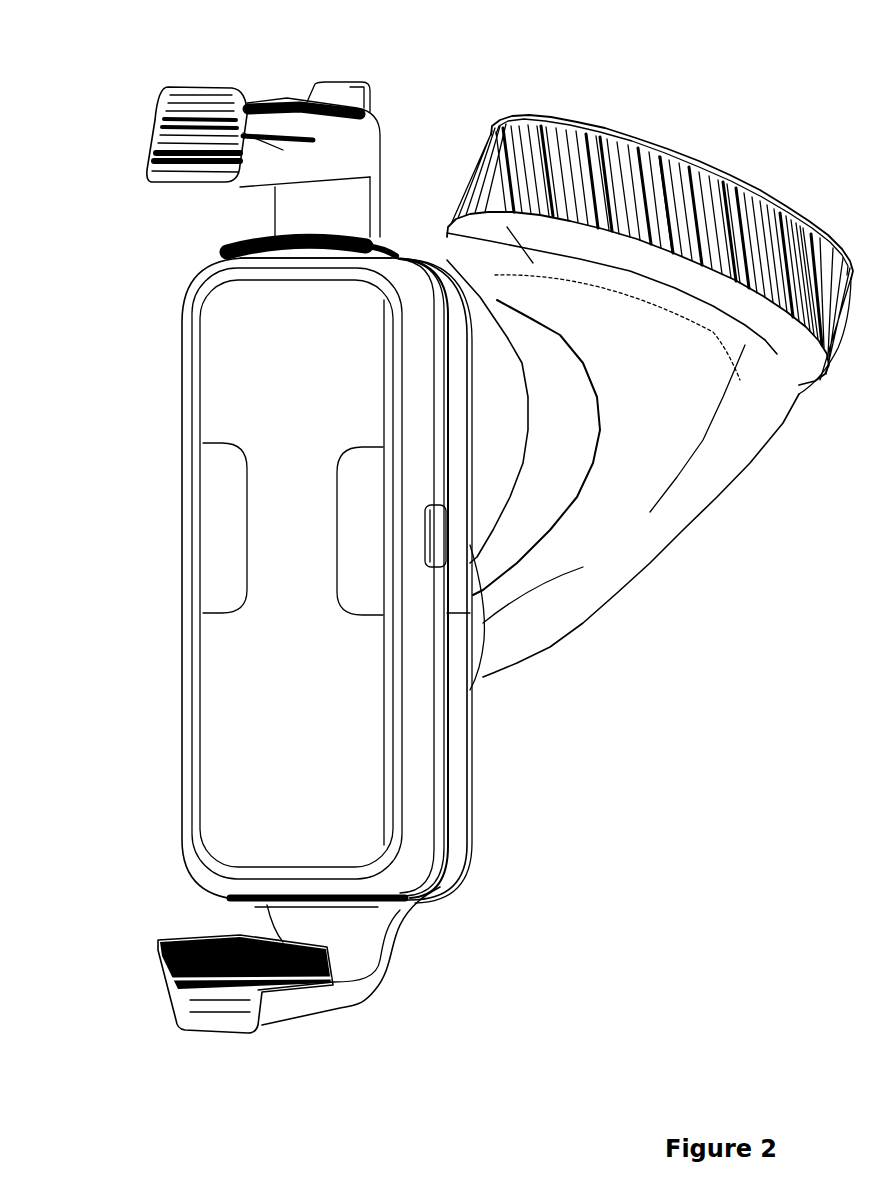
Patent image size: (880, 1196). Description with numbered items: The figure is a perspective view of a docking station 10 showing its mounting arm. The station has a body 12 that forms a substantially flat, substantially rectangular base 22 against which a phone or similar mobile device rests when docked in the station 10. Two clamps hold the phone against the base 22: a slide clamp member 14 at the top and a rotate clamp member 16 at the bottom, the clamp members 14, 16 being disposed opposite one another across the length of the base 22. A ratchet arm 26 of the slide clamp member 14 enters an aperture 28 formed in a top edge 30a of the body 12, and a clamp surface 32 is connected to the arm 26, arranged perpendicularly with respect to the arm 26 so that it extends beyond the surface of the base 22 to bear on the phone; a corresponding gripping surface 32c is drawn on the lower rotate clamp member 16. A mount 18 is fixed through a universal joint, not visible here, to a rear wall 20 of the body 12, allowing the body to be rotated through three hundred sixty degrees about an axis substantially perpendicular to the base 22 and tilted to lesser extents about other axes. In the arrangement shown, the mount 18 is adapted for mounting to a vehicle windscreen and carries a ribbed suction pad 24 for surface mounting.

The docking station 10 is at (505, 895).
The body 12 is at (168, 503).
The slide clamp member 14 is at (272, 122).
The rotate clamp member 16 is at (200, 1008).
The mount 18 is at (670, 530).
The rear wall 20 is at (450, 708).
The base 22 is at (220, 692).
The suction pad 24 is at (748, 182).
The ratchet arm 26 is at (323, 200).
The aperture 28 is at (285, 238).
The top edge 30a is at (236, 247).
The clamp surface 32 is at (183, 189).
The lower grip pad 32c is at (215, 947).